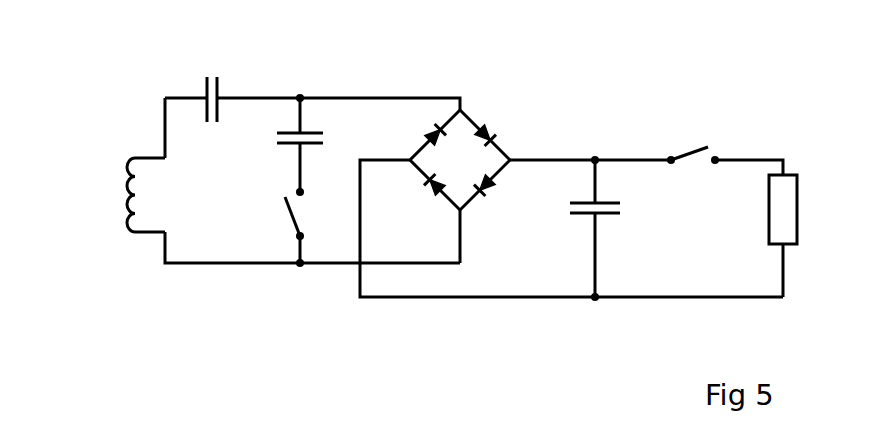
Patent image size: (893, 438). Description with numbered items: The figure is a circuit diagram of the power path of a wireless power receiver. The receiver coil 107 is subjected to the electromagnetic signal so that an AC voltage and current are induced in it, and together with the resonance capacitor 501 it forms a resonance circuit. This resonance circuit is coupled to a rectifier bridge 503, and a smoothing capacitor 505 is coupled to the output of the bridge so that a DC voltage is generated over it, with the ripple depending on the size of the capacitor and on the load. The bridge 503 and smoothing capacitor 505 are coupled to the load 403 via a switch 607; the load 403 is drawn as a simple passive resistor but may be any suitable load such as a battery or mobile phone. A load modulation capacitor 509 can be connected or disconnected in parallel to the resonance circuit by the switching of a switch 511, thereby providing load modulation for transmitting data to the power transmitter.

The resonance capacitor 501 is at (215, 80).
The load modulation capacitor 509 is at (285, 133).
The switch 511 is at (297, 228).
The receiver coil 107 is at (133, 210).
The rectifier bridge 503 is at (488, 123).
The smoothing capacitor 505 is at (572, 210).
The switch 607 is at (693, 150).
The load 403 is at (785, 222).